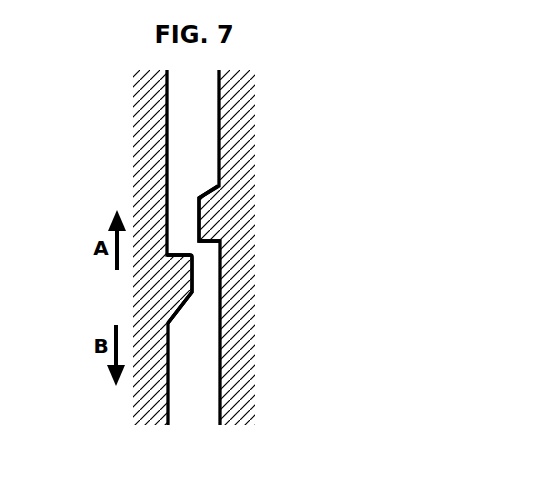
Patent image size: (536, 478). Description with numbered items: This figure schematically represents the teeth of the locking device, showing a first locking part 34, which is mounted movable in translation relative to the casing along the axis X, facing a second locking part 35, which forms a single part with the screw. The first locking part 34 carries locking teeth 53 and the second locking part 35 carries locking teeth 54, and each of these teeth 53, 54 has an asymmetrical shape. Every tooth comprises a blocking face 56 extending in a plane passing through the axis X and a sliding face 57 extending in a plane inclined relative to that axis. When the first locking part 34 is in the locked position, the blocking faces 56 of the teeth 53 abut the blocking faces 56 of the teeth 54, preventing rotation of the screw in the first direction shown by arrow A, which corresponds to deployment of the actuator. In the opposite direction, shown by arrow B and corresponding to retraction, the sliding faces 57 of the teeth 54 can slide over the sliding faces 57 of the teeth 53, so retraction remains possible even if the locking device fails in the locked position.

The first locking part 34 is at (236, 121).
The second locking part 35 is at (153, 118).
The locking teeth of the first locking part 53 is at (181, 286).
The locking teeth of the second locking part 54 is at (211, 215).
The blocking face 56 is at (177, 256).
The sliding face 57 is at (209, 191).